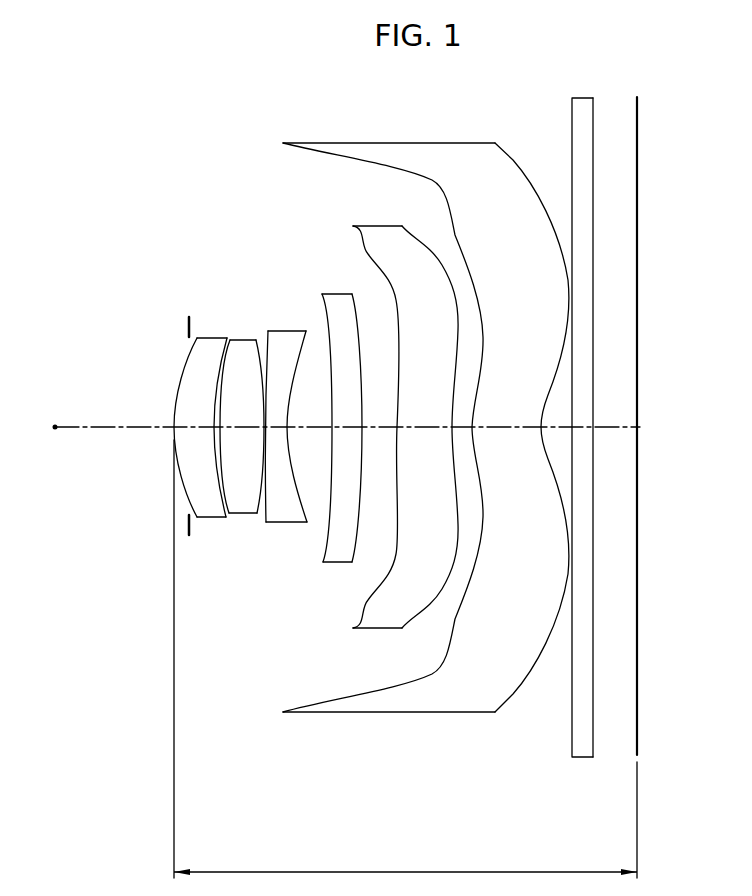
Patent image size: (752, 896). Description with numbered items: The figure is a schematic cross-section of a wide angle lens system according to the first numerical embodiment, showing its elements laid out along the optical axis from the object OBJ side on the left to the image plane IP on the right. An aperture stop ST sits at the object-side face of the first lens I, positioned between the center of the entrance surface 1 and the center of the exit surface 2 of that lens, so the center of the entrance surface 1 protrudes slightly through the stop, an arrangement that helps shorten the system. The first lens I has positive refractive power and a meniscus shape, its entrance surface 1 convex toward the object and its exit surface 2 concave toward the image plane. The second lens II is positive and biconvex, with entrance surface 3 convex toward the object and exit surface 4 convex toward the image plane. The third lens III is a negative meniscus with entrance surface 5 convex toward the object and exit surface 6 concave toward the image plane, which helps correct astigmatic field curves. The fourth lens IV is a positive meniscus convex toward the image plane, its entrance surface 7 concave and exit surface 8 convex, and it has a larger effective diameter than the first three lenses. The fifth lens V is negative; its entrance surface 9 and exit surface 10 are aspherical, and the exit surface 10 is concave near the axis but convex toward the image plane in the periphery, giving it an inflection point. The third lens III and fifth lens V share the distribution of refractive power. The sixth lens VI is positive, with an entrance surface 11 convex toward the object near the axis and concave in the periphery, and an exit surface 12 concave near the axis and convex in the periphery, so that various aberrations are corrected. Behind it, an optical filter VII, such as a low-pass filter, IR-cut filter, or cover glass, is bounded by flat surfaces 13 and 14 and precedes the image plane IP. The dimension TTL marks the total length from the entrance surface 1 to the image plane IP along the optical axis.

The entrance surface of first lens 1 is at (180, 378).
The exit surface of first lens 2 is at (218, 385).
The entrance surface of second lens 3 is at (228, 385).
The exit surface of second lens 4 is at (260, 385).
The entrance surface of third lens 5 is at (268, 352).
The exit surface of third lens 6 is at (295, 356).
The entrance surface of fourth lens 7 is at (327, 328).
The exit surface of fourth lens 8 is at (357, 328).
The entrance surface of fifth lens 9 is at (383, 279).
The exit surface of fifth lens 10 is at (418, 236).
The entrance surface of sixth lens 11 is at (445, 213).
The exit surface of sixth lens 12 is at (513, 160).
The object-side surface of optical filter 13 is at (570, 99).
The image-side surface of optical filter 14 is at (595, 99).
The first lens I is at (181, 435).
The second lens II is at (242, 435).
The third lens III is at (287, 422).
The fourth lens IV is at (335, 438).
The fifth lens V is at (384, 433).
The sixth lens VI is at (426, 450).
The optical filter VII is at (583, 449).
The aperture stop ST is at (185, 322).
The image plane IP is at (638, 128).
The object OBJ is at (340, 411).
The total length TTL is at (405, 659).